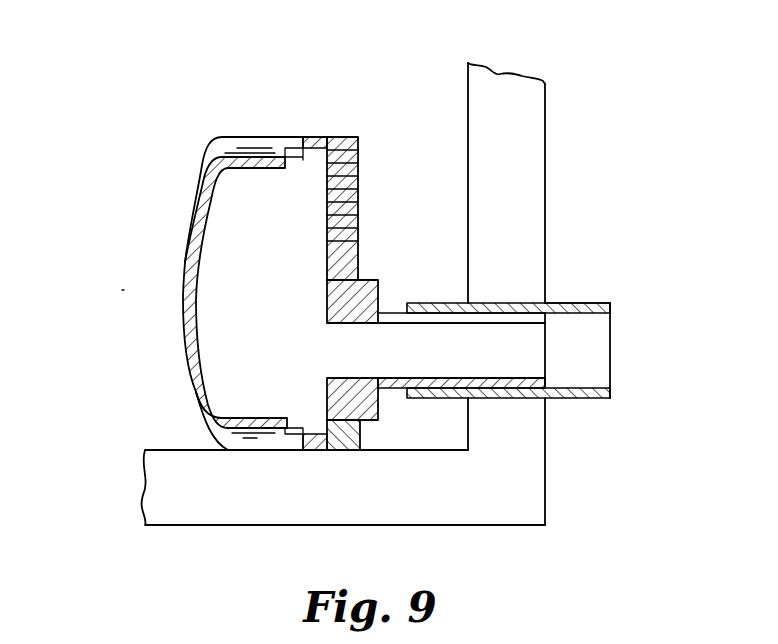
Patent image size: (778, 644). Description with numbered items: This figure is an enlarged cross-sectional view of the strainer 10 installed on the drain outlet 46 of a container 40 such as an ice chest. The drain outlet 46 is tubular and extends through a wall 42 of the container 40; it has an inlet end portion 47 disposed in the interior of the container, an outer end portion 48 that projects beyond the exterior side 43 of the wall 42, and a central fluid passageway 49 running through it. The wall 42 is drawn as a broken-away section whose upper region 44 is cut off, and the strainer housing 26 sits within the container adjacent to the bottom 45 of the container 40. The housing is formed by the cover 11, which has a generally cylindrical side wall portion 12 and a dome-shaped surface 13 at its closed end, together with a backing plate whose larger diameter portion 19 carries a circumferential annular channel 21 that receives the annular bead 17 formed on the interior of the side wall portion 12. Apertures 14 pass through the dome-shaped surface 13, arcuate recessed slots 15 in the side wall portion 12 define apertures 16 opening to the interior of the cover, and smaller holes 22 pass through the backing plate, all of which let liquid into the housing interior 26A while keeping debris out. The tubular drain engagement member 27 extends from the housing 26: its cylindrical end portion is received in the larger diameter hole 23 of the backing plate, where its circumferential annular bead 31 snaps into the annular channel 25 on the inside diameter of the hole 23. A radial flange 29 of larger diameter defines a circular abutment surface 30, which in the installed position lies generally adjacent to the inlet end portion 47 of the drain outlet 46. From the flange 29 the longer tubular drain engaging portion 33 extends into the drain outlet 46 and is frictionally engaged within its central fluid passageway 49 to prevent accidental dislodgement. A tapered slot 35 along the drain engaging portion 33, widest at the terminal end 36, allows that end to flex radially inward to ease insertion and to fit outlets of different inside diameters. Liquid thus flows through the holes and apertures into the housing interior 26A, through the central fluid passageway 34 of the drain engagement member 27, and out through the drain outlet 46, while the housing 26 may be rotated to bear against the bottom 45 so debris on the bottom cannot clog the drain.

The strainer 10 is at (118, 291).
The cover 11 is at (278, 134).
The cylindrical side wall portion 12 is at (311, 136).
The dome-shaped surface 13 is at (182, 300).
The apertures 14 is at (180, 240).
The arcuate recessed slots 15 is at (241, 142).
The apertures 16 is at (300, 158).
The annular bead 17 is at (352, 271).
The circumferential annular channel 21 is at (340, 147).
The larger diameter portion 19 is at (358, 141).
The smaller holes 22 is at (357, 210).
The larger diameter hole 23 is at (330, 393).
The annular channel 25 is at (335, 471).
The circumferential annular bead 31 is at (336, 452).
The strainer housing 26 is at (205, 417).
The housing interior 26A is at (277, 268).
The tubular drain engagement member 27 is at (327, 317).
The radial flange 29 is at (390, 461).
The abutment surface 30 is at (369, 424).
The tubular drain engaging portion 33 is at (429, 392).
The central fluid passageway 34 is at (437, 358).
The tapered slot 35 is at (493, 322).
The terminal end 36 is at (546, 349).
The container 40 is at (545, 143).
The wall 42 is at (533, 188).
The exterior side 43 is at (543, 215).
The wall top 44 is at (466, 103).
The bottom 45 is at (458, 508).
The drain outlet 46 is at (582, 399).
The inlet end portion 47 is at (427, 303).
The outer end portion 48 is at (597, 304).
The central fluid passageway 49 is at (598, 365).